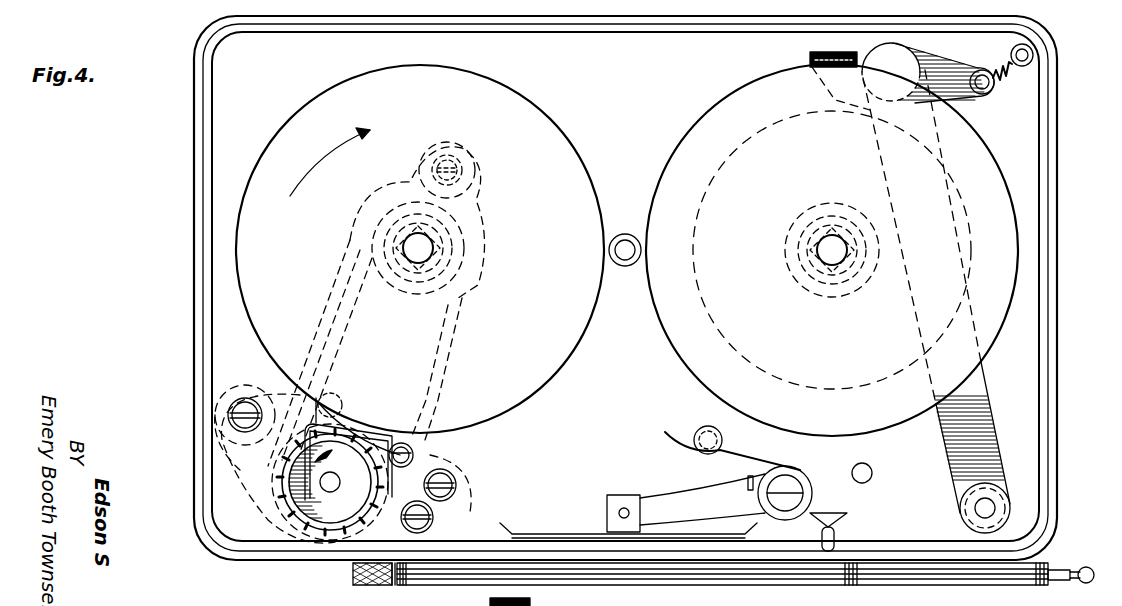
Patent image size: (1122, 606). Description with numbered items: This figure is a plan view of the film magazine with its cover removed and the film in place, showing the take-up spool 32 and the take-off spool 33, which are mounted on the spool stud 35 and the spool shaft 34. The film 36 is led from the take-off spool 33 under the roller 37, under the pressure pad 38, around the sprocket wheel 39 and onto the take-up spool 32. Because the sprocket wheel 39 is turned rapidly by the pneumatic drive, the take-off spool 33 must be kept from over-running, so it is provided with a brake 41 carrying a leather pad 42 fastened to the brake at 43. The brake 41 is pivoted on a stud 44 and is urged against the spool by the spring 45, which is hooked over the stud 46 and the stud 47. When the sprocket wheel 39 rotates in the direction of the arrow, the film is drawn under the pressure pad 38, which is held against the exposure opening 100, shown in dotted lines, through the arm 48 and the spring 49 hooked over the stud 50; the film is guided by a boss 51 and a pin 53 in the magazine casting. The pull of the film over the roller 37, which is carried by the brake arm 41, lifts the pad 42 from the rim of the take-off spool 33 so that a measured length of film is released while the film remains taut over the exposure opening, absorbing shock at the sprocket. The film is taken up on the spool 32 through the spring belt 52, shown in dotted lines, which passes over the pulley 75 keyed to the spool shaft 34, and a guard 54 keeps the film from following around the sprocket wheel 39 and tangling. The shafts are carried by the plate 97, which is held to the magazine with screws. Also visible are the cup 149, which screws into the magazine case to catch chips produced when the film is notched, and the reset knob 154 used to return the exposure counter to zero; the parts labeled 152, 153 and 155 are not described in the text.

The take-up spool 32 is at (545, 372).
The take-off spool 33 is at (710, 368).
The spool shaft 34 is at (433, 248).
The spool stud 35 is at (832, 236).
The film 36 is at (460, 538).
The roller 37 is at (975, 508).
The pressure pad 38 is at (540, 534).
The sprocket wheel 39 is at (298, 527).
The brake 41 is at (968, 446).
The pad 42 is at (810, 62).
The pad fastening 43 is at (810, 55).
The stud 44 is at (905, 66).
The spring 45 is at (1002, 78).
The stud 46 is at (990, 96).
The stud 47 is at (1035, 55).
The arm 48 is at (676, 502).
The spring 49 is at (668, 443).
The stud 50 is at (706, 430).
The boss 51 is at (830, 522).
The spring belt 52 is at (462, 340).
The pin 53 is at (836, 532).
The guard 54 is at (402, 442).
The pulley 75 is at (395, 285).
The plate 97 is at (272, 385).
The exposure opening 100 is at (637, 545).
The cup 149 is at (366, 585).
The rod end fitting 152 is at (1020, 580).
The rod end ring 153 is at (1088, 584).
The reset knob 154 is at (535, 603).
The collar 155 is at (419, 584).